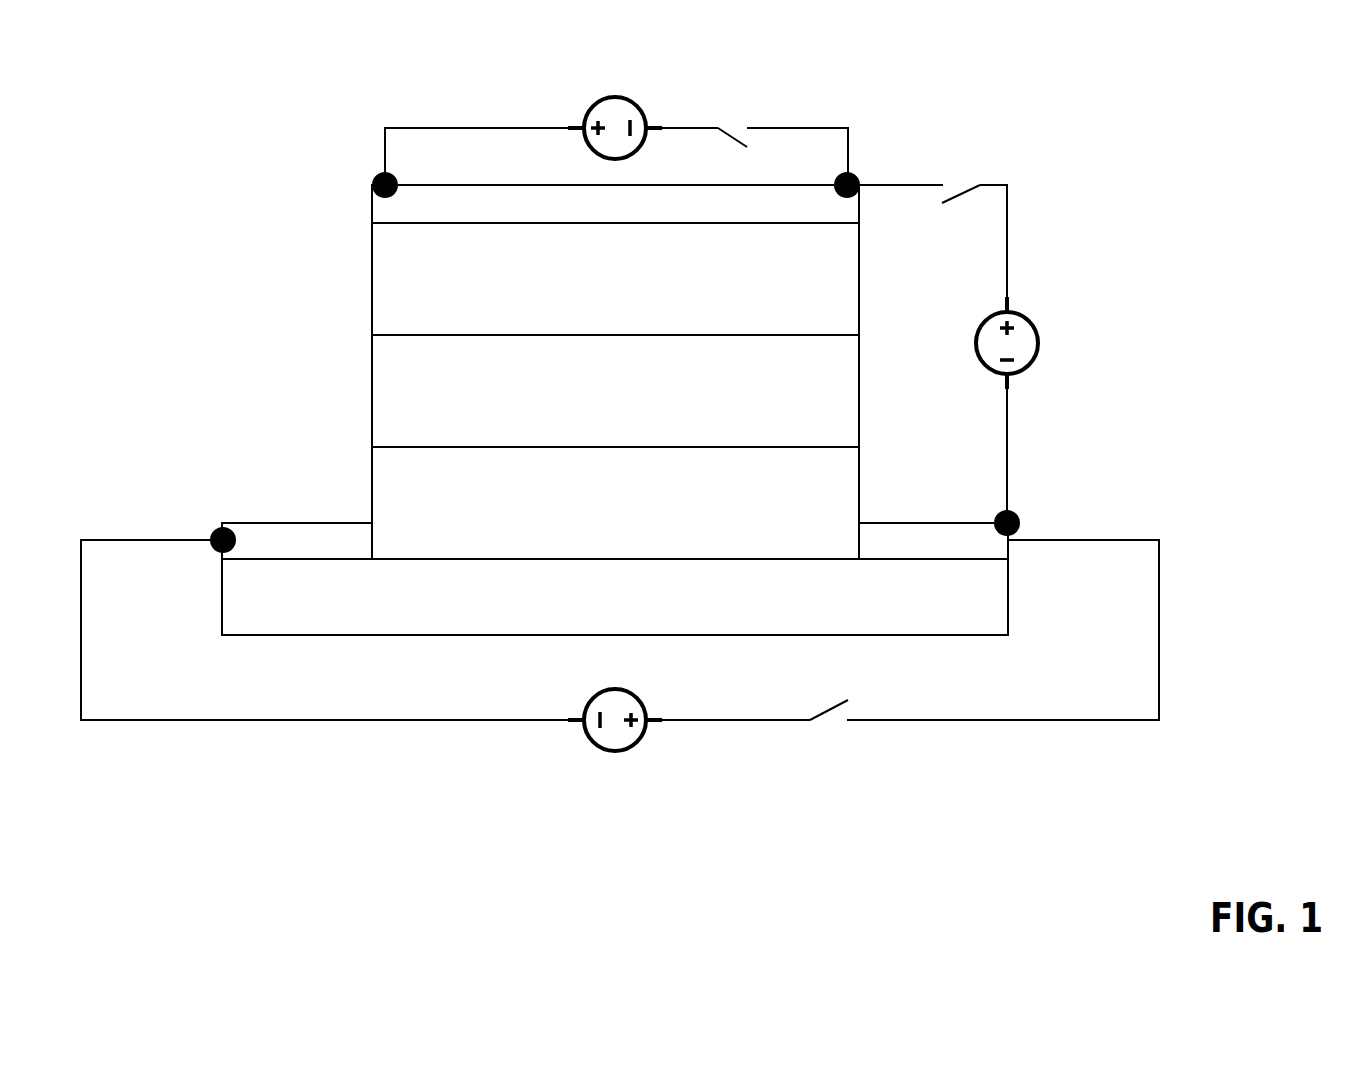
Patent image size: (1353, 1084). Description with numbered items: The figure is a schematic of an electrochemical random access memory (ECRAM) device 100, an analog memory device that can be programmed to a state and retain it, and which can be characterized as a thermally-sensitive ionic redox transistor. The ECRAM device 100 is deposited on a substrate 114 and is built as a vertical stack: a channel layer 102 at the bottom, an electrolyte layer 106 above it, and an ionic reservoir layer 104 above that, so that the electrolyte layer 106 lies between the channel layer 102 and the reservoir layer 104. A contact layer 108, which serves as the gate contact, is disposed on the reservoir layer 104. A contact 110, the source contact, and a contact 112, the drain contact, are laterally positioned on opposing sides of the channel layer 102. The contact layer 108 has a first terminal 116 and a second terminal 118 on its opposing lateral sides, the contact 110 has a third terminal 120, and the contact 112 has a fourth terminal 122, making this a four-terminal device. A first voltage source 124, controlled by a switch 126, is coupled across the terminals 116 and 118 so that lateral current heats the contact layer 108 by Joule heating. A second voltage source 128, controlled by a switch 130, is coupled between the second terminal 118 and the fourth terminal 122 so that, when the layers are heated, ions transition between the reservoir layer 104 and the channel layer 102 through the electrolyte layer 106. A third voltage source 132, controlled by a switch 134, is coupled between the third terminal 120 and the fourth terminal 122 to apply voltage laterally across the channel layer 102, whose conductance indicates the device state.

The ECRAM device 100 is at (1229, 254).
The channel layer 102 is at (799, 551).
The ionic reservoir layer 104 is at (799, 324).
The electrolyte layer 106 is at (799, 437).
The contact layer 108 is at (774, 214).
The contact 110 is at (267, 522).
The contact 112 is at (960, 522).
The substrate 114 is at (981, 624).
The first terminal 116 is at (382, 172).
The second terminal 118 is at (856, 176).
The third terminal 120 is at (220, 555).
The fourth terminal 122 is at (1020, 520).
The first voltage source 124 is at (640, 105).
The switch 126 is at (740, 110).
The second voltage source 128 is at (1037, 328).
The switch 130 is at (965, 177).
The third voltage source 132 is at (622, 748).
The switch 134 is at (833, 737).